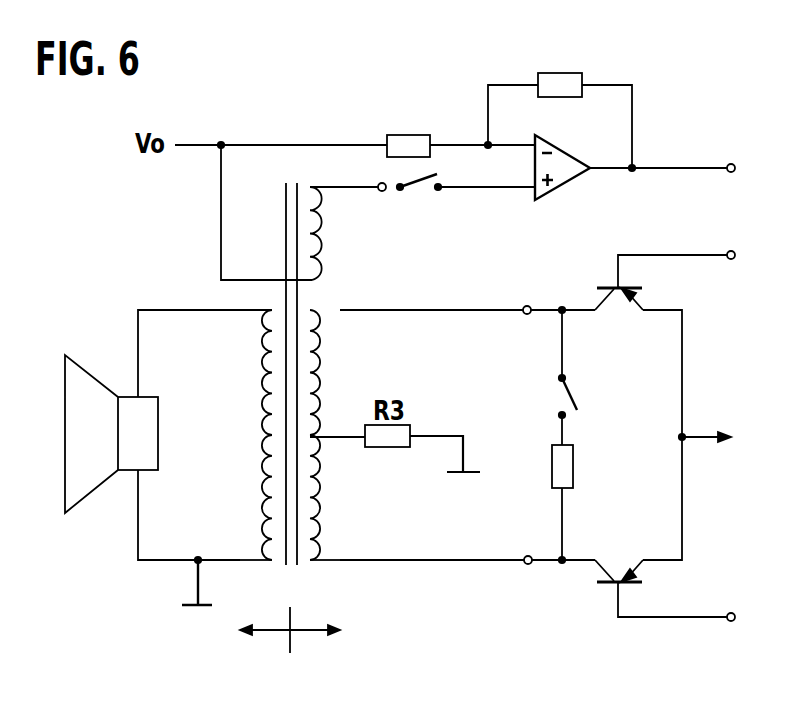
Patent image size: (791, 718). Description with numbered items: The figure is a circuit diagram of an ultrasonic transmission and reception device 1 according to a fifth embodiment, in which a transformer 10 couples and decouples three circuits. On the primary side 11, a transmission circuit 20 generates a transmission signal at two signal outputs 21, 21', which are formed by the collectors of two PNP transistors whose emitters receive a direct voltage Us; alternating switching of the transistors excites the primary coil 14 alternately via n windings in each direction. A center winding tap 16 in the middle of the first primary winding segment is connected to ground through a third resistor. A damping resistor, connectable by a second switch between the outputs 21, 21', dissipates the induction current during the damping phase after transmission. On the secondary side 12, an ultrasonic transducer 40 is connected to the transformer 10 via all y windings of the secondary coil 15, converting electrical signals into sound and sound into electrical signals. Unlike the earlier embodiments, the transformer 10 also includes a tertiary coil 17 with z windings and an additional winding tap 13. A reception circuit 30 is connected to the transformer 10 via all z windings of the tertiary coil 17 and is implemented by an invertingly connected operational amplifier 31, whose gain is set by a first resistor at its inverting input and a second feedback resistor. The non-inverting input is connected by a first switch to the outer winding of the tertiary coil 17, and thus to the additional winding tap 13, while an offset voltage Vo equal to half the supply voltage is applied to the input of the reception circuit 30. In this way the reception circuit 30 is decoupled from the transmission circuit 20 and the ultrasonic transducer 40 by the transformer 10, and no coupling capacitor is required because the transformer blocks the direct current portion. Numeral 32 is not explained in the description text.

The ultrasonic transmission and reception device 1 is at (135, 607).
The transformer 10 is at (286, 170).
The primary side 11 is at (316, 648).
The secondary side 12 is at (264, 648).
The additional winding tap 13 is at (317, 185).
The primary coil 14 is at (318, 545).
The secondary coil 15 is at (266, 545).
The center winding tap 16 is at (315, 437).
The tertiary coil 17 is at (312, 278).
The transmission circuit 20 is at (553, 467).
The signal output 21 is at (505, 282).
The signal output 21' is at (506, 589).
The reception circuit 30 is at (556, 147).
The operational amplifier 31 is at (567, 183).
The switch terminal 32 is at (382, 192).
The ultrasonic transducer 40 is at (108, 281).